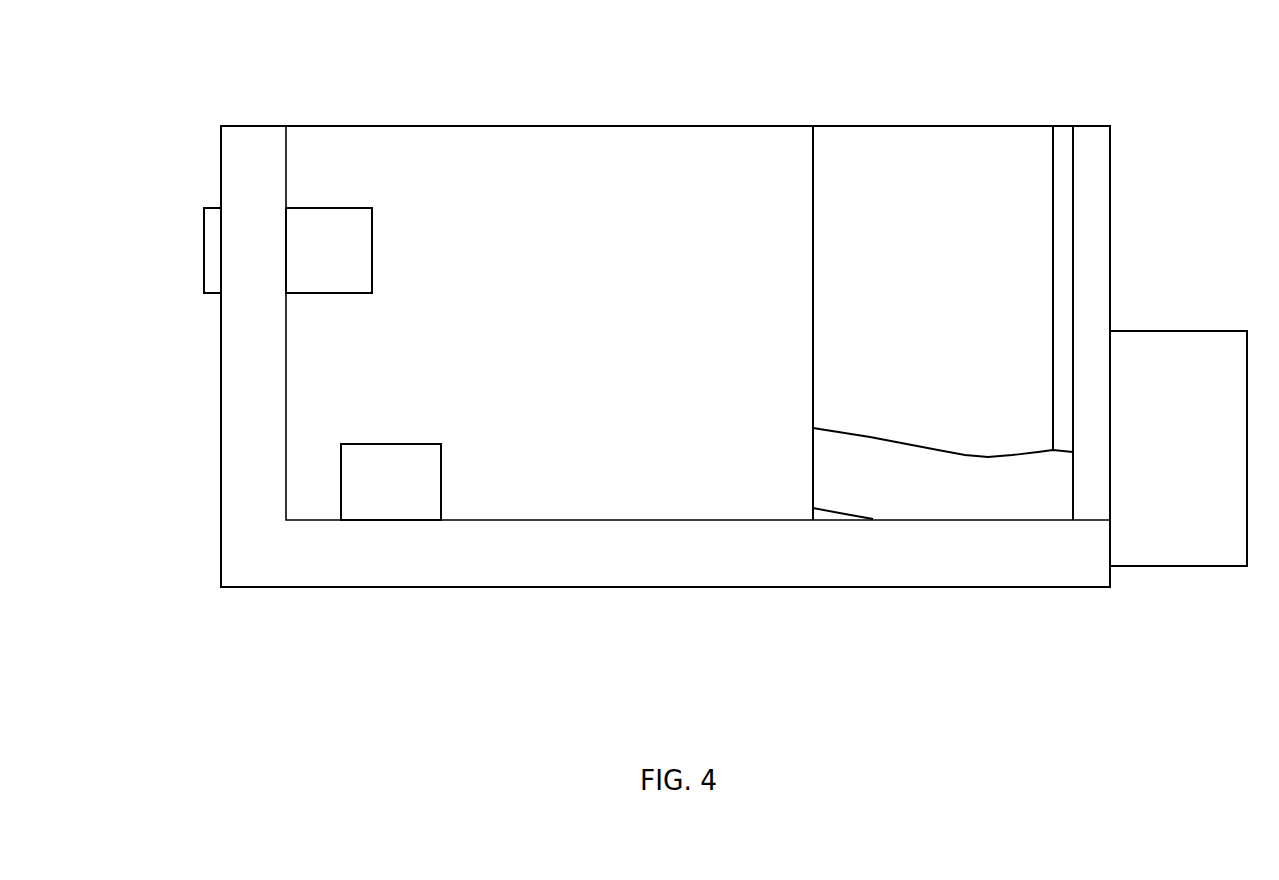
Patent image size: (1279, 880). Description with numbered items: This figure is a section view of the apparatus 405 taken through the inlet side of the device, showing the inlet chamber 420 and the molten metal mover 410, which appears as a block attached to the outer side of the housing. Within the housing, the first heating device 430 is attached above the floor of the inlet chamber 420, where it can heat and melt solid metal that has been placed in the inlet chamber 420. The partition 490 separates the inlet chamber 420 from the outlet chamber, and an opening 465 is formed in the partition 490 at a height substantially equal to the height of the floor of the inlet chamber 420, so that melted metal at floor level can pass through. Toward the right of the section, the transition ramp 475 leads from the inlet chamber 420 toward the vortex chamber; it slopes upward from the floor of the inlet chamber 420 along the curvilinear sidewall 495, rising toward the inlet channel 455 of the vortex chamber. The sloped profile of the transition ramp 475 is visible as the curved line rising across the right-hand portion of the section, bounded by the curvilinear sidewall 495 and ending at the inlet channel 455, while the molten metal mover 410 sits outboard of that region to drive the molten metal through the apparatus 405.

The apparatus 405 is at (234, 84).
The partition 490 is at (461, 135).
The inlet chamber 420 is at (584, 332).
The first heating device 430 is at (317, 268).
The opening 465 is at (377, 474).
The curvilinear sidewall 495 is at (887, 153).
The inlet channel 455 is at (1060, 143).
The transition ramp 475 is at (914, 495).
The molten metal mover 410 is at (1170, 355).